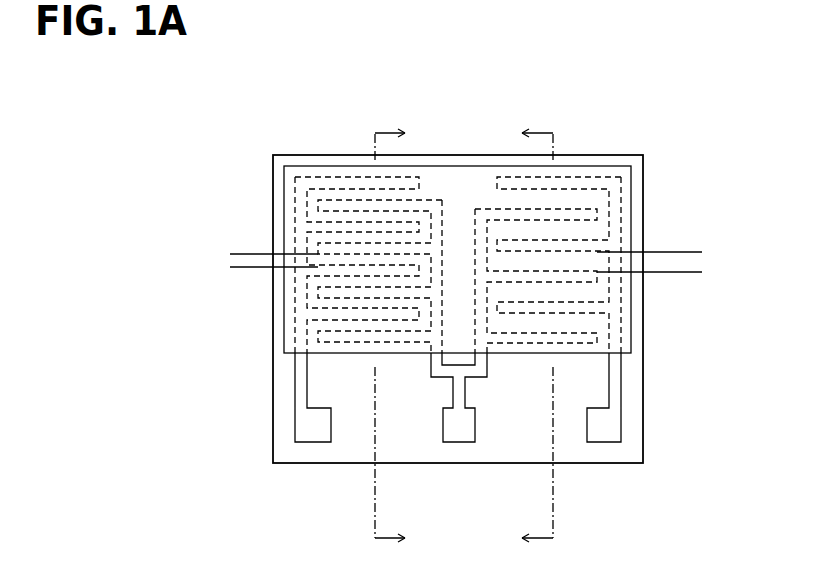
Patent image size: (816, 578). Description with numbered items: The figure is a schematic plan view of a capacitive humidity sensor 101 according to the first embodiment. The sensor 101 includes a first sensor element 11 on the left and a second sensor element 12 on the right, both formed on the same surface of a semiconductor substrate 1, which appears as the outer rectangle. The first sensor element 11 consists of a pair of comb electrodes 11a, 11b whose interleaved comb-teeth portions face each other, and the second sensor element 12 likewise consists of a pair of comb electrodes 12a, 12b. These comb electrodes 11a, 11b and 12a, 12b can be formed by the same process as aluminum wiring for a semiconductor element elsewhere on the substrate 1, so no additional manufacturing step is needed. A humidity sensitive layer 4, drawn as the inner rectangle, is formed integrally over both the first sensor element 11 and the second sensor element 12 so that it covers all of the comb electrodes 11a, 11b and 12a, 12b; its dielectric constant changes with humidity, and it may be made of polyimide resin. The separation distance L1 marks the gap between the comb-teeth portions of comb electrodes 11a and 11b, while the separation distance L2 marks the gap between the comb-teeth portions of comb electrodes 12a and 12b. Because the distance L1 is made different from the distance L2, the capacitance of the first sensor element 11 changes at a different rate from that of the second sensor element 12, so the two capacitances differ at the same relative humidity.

The capacitive humidity sensor 101 is at (257, 138).
The semiconductor substrate 1 is at (575, 440).
The humidity sensitive layer 4 is at (623, 175).
The first sensor element 11 is at (443, 117).
The comb electrode 11a is at (310, 343).
The comb electrode 11b is at (431, 347).
The second sensor element 12 is at (633, 117).
The comb electrode 12a is at (480, 345).
The comb electrode 12b is at (617, 345).
The separation distance L1 is at (237, 237).
The separation distance L2 is at (697, 232).